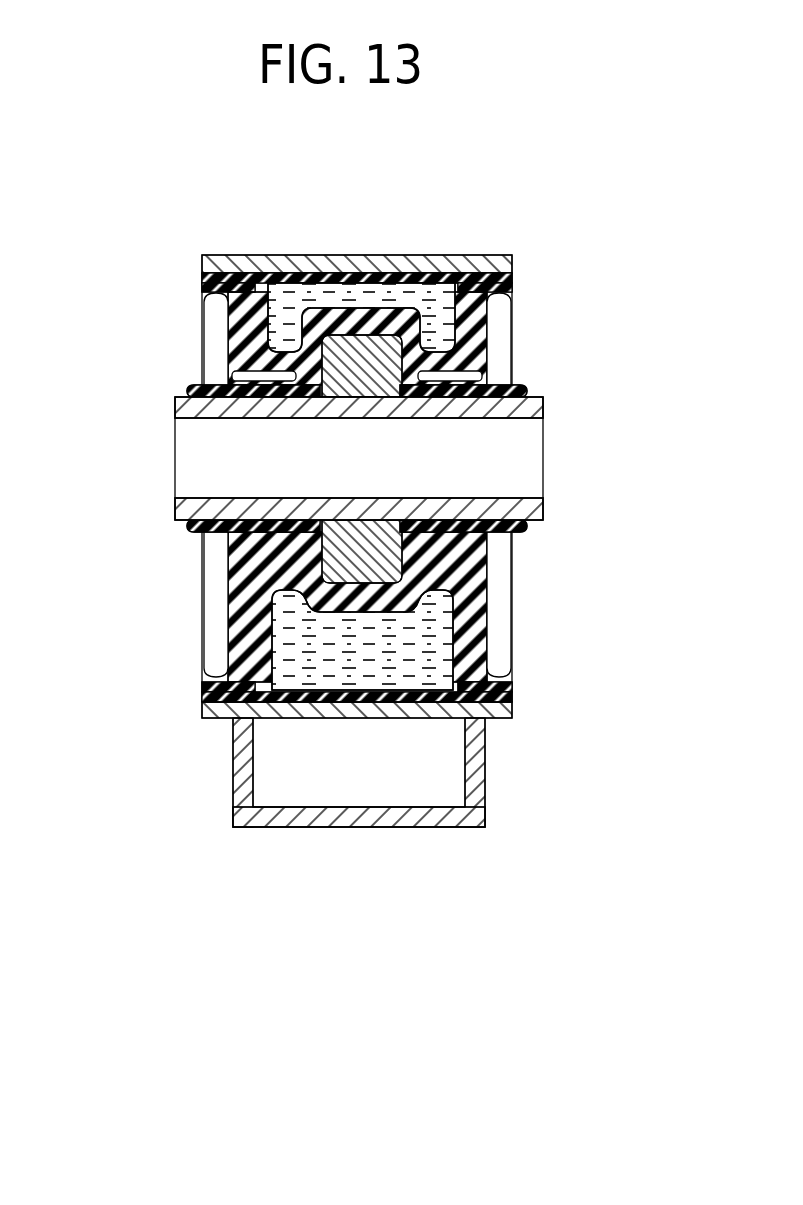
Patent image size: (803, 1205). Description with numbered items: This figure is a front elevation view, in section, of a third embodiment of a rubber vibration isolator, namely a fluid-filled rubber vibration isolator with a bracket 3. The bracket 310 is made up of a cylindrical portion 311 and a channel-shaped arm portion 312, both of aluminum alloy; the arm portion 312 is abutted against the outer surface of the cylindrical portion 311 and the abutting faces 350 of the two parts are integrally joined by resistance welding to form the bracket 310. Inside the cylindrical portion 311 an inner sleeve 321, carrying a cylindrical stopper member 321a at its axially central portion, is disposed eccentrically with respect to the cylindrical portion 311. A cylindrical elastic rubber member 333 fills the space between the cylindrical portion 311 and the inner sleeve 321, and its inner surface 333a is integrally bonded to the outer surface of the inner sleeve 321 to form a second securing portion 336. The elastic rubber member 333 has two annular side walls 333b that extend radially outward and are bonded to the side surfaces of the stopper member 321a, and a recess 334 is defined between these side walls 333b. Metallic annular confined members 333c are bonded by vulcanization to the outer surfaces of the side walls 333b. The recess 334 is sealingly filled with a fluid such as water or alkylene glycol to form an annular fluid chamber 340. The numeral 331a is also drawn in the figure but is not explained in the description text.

The fluid-filled rubber vibration isolator with a bracket 3 is at (222, 912).
The bracket 310 is at (486, 761).
The cylindrical portion 311 is at (418, 268).
The arm portion 312 is at (432, 828).
The inner sleeve 321 is at (489, 408).
The stopper member 321a is at (362, 548).
The contact layer 331a is at (315, 280).
The elastic rubber member 333 is at (234, 600).
The inner surface 333a is at (195, 418).
The annular side wall 333b is at (245, 650).
The metallic annular confined member 333c is at (212, 298).
The recess 334 is at (328, 672).
The second securing portion 336 is at (232, 498).
The annular fluid chamber 340 is at (266, 577).
The abutting faces 350 is at (232, 720).